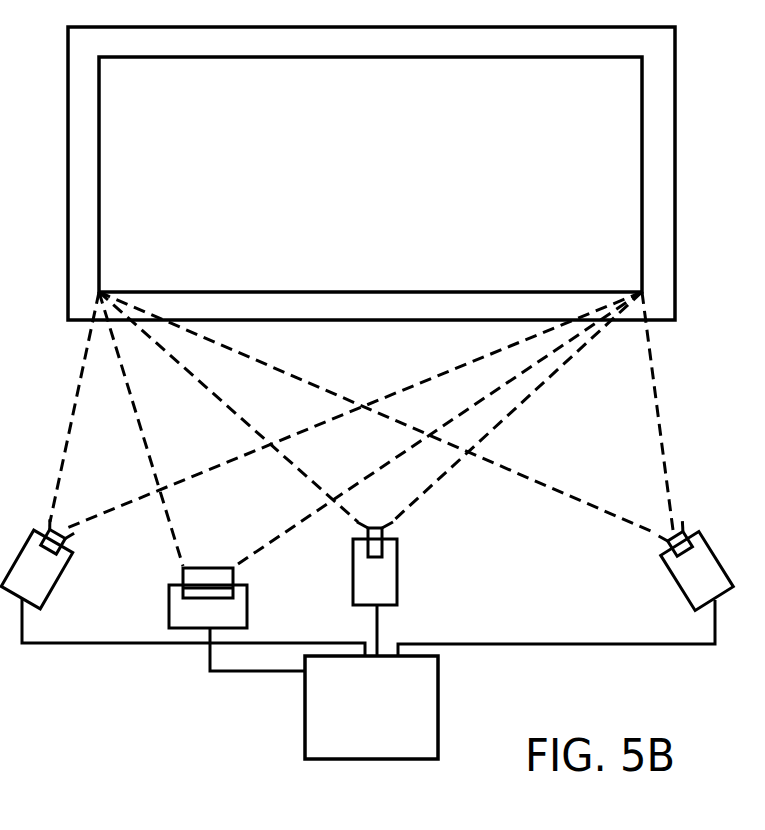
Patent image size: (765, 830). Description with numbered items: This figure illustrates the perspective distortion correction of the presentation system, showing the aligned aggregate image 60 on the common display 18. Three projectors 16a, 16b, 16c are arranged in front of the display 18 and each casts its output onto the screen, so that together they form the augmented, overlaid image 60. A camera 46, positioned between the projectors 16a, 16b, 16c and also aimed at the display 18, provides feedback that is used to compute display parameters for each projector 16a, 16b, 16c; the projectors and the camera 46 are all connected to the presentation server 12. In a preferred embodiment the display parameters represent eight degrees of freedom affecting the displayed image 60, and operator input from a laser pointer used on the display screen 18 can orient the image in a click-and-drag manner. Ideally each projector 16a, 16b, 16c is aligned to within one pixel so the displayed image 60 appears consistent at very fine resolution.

The common display 18 is at (67, 60).
The aligned aggregate image 60 is at (643, 116).
The projector 16a is at (54, 587).
The projector 16b is at (398, 577).
The projector 16c is at (687, 597).
The camera 46 is at (248, 607).
The presentation server 12 is at (372, 760).